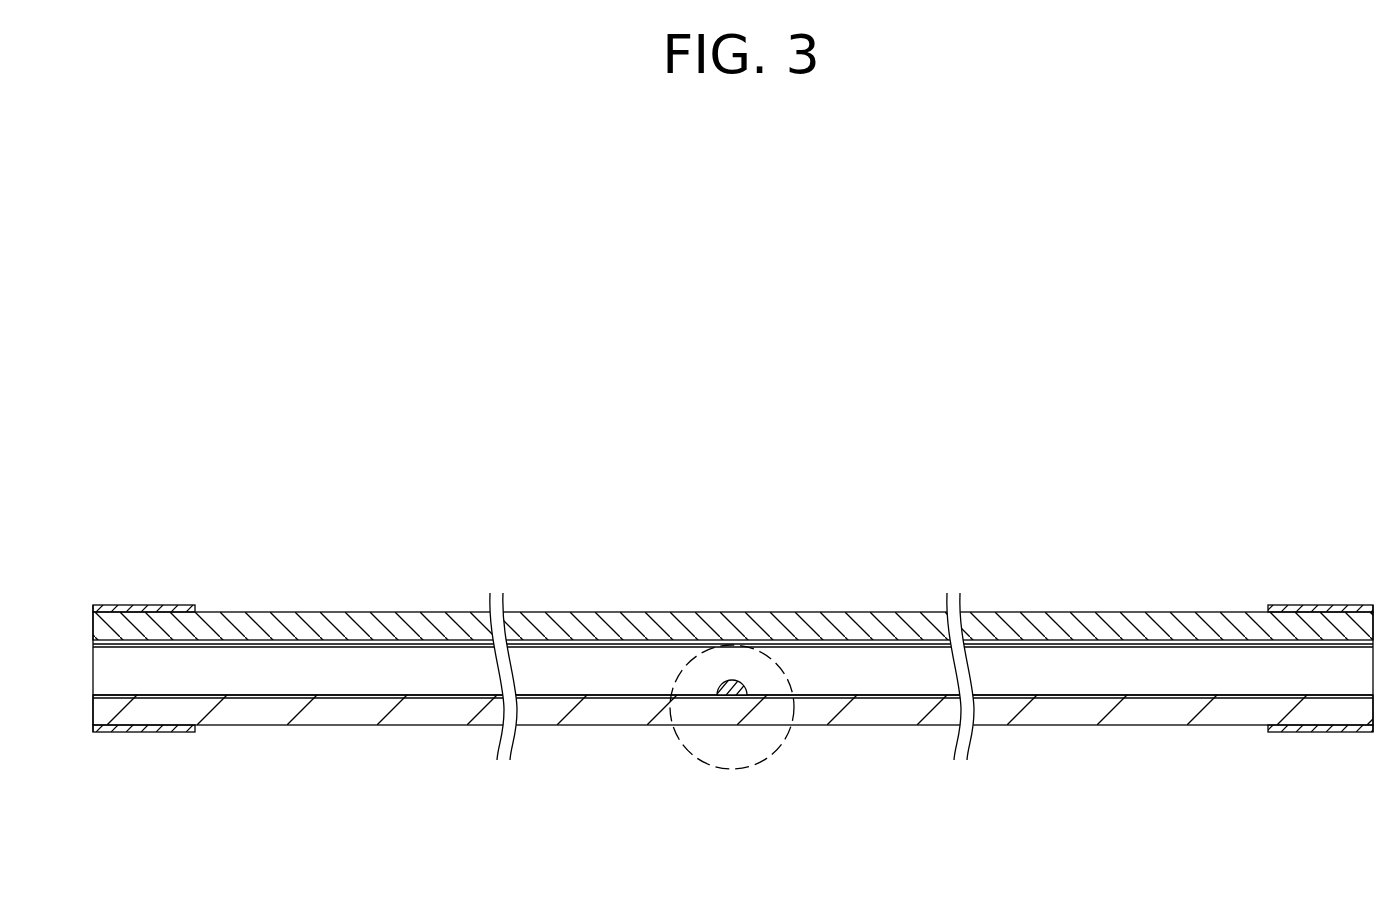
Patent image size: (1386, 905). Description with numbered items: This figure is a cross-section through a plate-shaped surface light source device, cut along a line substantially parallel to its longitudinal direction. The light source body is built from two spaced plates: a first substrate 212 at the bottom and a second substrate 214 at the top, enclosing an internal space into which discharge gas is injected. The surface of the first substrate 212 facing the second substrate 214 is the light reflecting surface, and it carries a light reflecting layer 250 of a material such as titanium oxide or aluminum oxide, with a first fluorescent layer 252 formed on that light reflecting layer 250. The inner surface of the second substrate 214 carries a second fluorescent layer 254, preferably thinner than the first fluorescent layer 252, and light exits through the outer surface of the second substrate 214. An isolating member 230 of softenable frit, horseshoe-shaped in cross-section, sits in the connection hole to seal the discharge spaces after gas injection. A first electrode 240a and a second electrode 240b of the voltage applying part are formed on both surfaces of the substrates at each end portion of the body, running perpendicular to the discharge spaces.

The first substrate 212 is at (220, 717).
The second substrate 214 is at (248, 618).
The isolating member 230 is at (737, 680).
The first electrode 240a is at (140, 606).
The second electrode 240b is at (1307, 606).
The light reflecting layer 250 is at (312, 694).
The first fluorescent layer 252 is at (405, 688).
The second fluorescent layer 254 is at (352, 643).